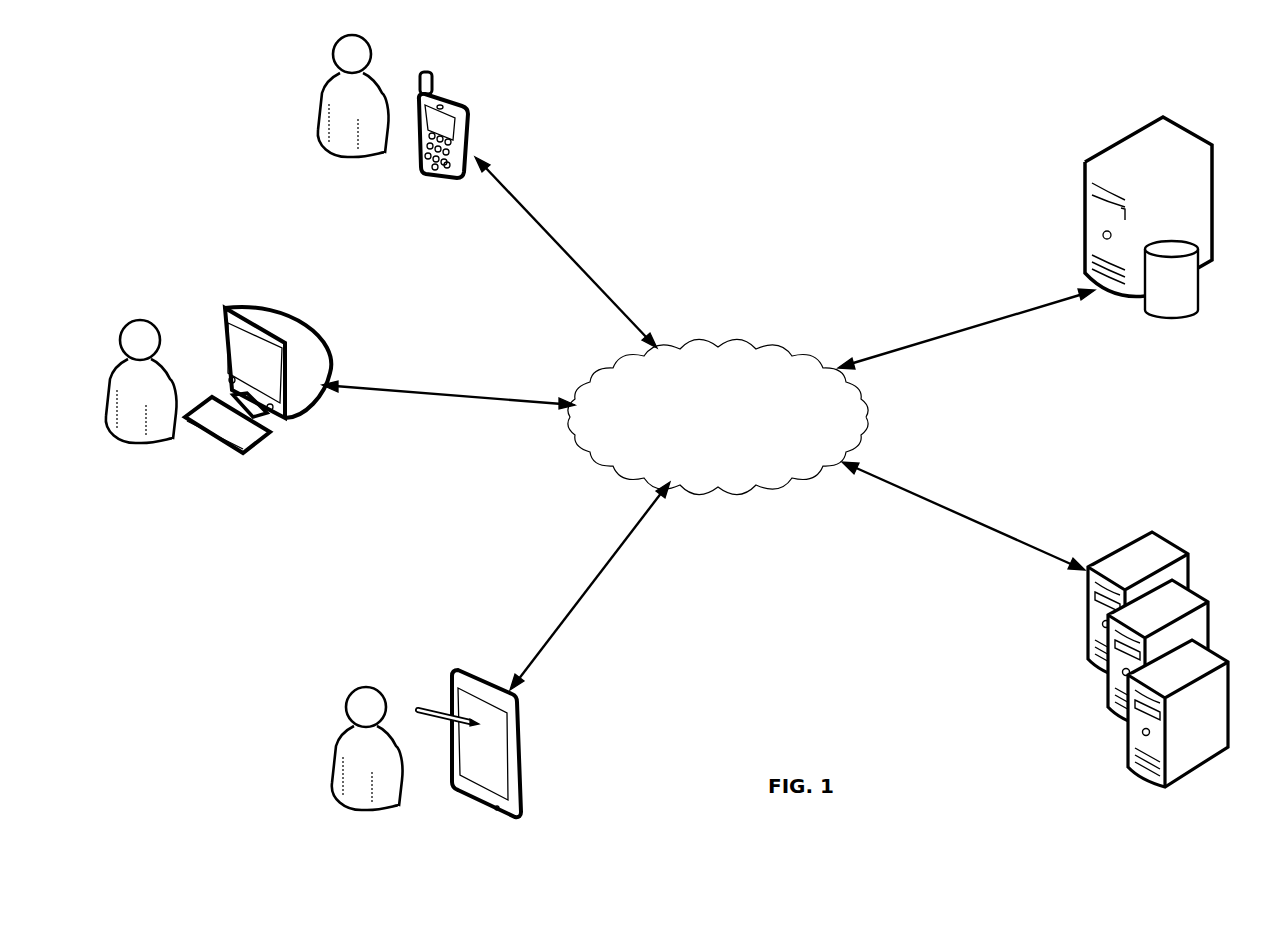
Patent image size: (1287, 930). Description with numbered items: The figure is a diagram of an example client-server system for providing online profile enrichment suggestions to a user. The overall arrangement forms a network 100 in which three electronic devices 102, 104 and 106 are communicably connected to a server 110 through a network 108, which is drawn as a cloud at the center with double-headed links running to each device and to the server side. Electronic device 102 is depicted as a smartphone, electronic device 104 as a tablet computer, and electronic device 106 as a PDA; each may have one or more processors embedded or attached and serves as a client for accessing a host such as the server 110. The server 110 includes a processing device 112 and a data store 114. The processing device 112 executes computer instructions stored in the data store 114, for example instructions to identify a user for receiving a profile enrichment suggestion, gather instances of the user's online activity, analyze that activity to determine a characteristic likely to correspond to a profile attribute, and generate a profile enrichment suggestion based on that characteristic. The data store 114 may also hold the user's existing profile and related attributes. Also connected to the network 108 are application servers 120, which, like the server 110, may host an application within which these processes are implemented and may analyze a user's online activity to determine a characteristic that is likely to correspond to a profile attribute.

The network 100 is at (845, 78).
The electronic device 102 is at (455, 95).
The electronic device 104 is at (297, 320).
The electronic device 106 is at (463, 670).
The network 108 is at (720, 343).
The server 110 is at (1162, 213).
The processing device 112 is at (1187, 128).
The data store 114 is at (1198, 300).
The application servers 120 is at (1079, 749).